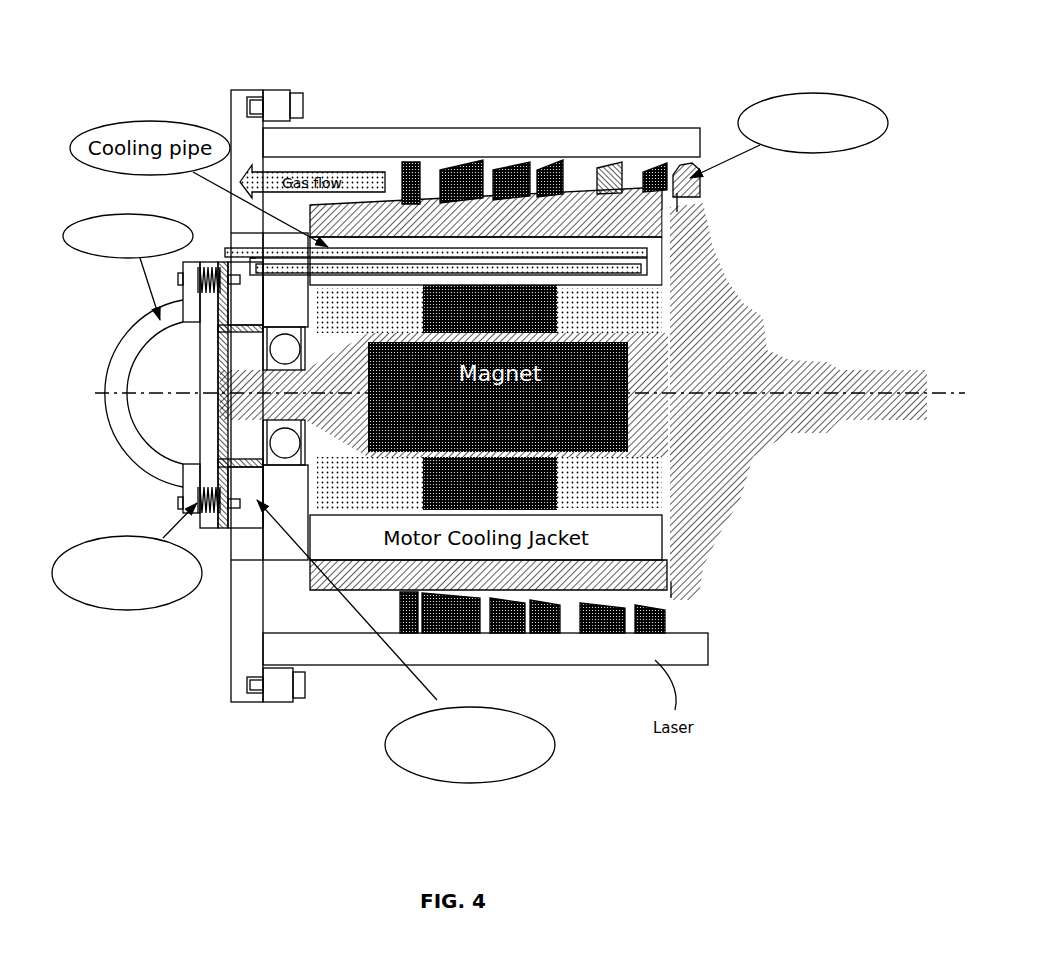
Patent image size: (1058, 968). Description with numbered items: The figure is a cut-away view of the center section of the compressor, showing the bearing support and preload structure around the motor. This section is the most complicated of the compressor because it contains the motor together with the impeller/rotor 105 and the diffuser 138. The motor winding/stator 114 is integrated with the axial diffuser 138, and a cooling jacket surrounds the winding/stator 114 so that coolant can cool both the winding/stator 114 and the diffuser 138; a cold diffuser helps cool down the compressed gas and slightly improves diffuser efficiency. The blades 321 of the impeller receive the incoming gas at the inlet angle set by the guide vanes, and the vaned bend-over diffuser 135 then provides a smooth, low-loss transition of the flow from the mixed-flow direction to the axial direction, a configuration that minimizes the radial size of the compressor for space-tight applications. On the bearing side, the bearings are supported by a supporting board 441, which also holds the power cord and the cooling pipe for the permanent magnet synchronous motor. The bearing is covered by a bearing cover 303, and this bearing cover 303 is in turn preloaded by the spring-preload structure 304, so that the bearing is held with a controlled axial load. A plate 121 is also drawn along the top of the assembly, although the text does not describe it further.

The impeller/rotor 105 is at (767, 380).
The winding/stator 114 is at (408, 298).
The housing top plate 121 is at (677, 140).
The vaned bend-over diffuser 135 is at (762, 150).
The axial diffuser 138 is at (567, 222).
The bearing cover 303 is at (120, 360).
The spring-preload structure 304 is at (95, 607).
The blades of impeller 321 is at (727, 280).
The supporting board 441 is at (243, 543).